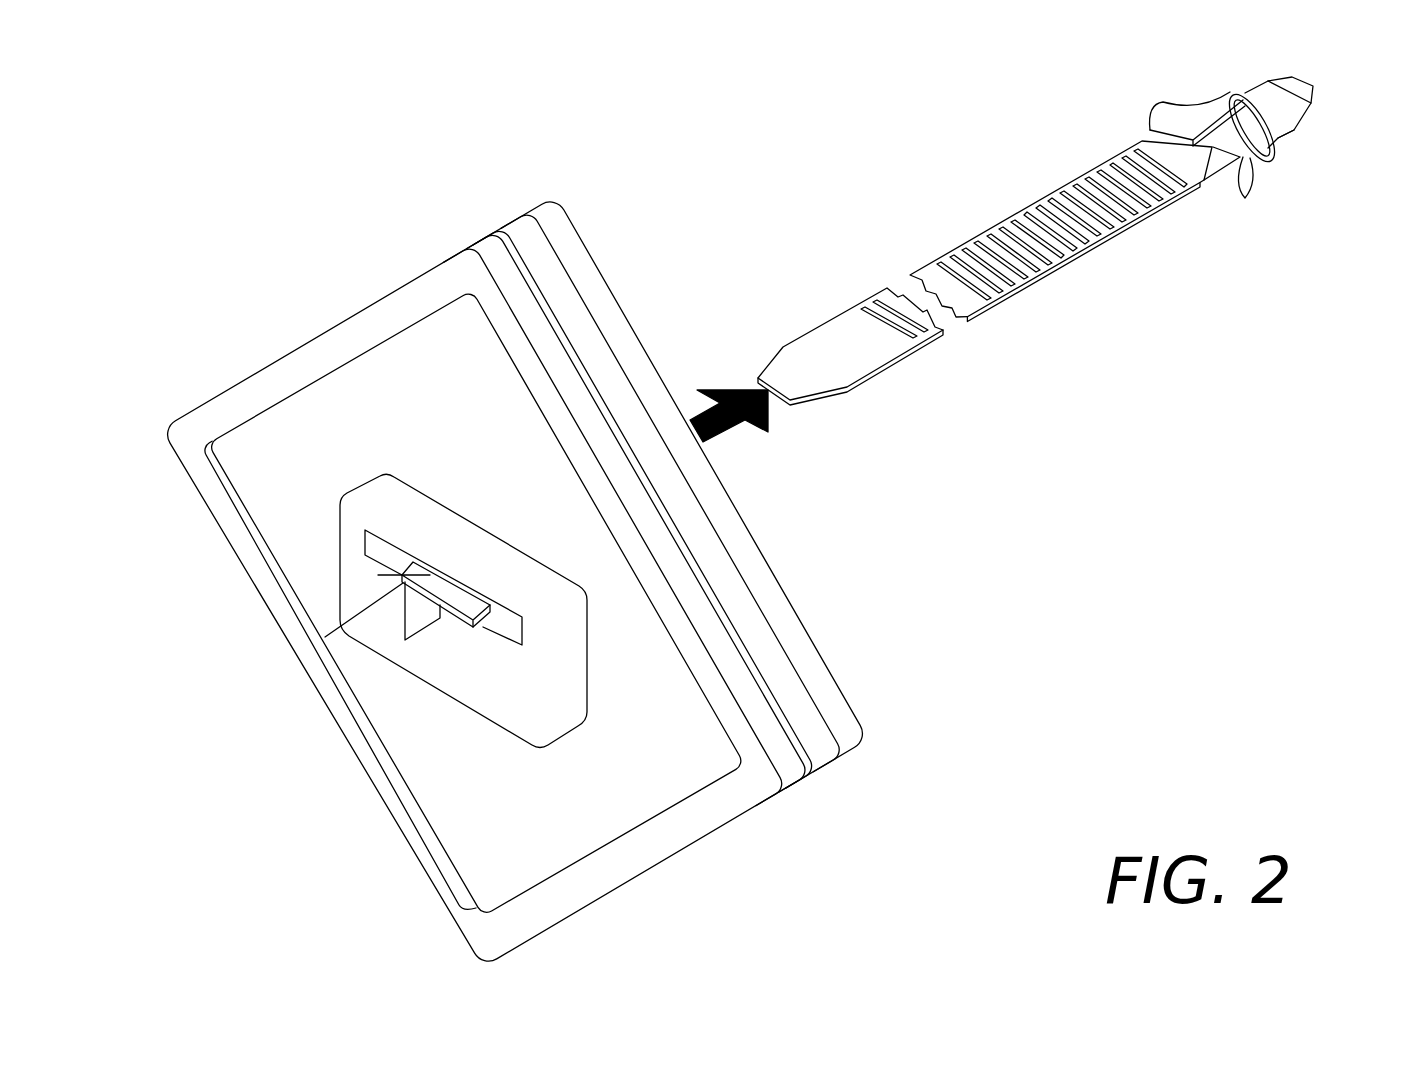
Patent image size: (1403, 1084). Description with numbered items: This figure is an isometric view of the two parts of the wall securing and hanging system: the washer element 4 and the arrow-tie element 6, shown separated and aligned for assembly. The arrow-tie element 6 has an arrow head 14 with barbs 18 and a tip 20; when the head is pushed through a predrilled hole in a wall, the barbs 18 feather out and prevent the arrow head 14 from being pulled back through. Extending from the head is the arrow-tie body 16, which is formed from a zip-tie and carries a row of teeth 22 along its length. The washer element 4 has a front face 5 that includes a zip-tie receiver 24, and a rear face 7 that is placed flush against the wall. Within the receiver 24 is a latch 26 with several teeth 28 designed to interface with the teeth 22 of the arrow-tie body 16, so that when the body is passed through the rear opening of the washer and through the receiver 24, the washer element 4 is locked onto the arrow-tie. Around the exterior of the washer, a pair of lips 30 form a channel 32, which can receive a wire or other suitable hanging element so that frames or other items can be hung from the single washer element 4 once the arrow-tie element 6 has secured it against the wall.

The washer element 4 is at (188, 320).
The front face 5 is at (552, 830).
The arrow-tie element 6 is at (1215, 344).
The rear face 7 is at (768, 554).
The arrow head 14 is at (1283, 178).
The arrow-tie body 16 is at (977, 225).
The barbs 18 is at (1230, 95).
The tip 20 is at (1307, 87).
The teeth 22 is at (1102, 190).
The zip-tie receiver 24 is at (471, 660).
The latch 26 is at (483, 630).
The teeth 28 is at (483, 607).
The lips 30 is at (552, 363).
The channel 32 is at (632, 417).